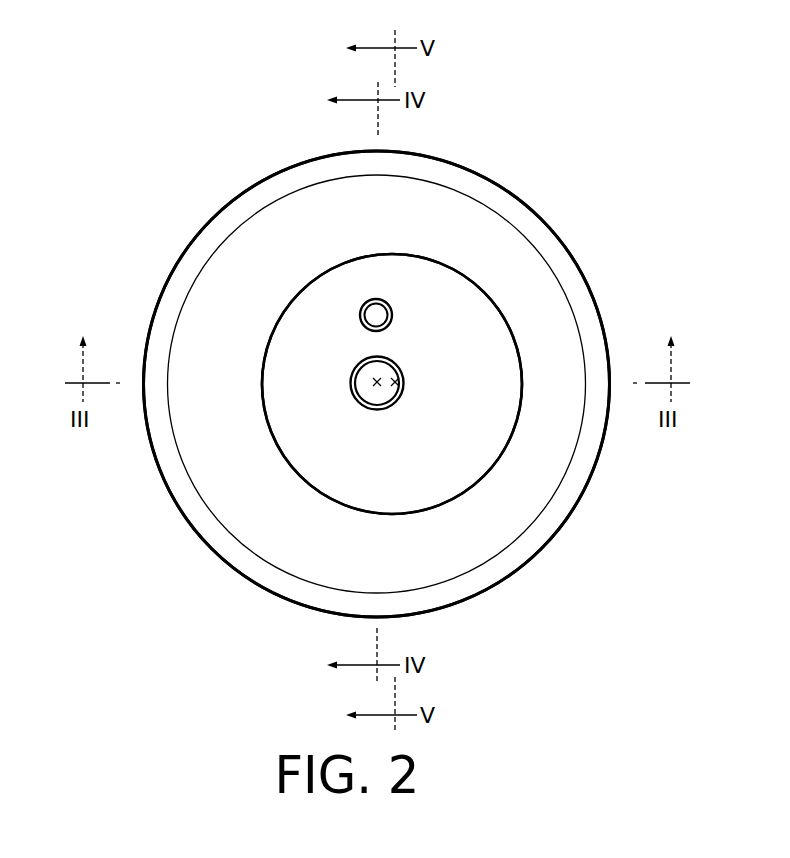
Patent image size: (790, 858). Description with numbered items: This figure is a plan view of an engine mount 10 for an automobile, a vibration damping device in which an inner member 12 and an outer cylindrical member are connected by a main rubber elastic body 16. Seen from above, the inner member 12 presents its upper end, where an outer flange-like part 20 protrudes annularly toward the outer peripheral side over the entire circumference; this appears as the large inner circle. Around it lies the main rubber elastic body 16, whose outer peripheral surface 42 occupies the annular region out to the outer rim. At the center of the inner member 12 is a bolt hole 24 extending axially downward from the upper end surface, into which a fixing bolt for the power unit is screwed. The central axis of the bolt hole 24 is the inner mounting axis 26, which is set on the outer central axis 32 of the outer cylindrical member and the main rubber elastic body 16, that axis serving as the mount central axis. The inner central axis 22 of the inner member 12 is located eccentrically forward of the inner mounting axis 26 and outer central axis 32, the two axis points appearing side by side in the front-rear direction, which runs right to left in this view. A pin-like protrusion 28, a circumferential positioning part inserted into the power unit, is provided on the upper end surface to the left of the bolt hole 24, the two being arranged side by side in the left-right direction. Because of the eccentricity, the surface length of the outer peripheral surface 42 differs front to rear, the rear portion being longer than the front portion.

The engine mount 10 is at (614, 214).
The inner member 12 is at (470, 258).
The main rubber elastic body 16 is at (189, 224).
The outer flange-like part 20 is at (472, 445).
The inner central axis 22 is at (395, 378).
The bolt hole 24 is at (378, 403).
The inner mounting axis 26 is at (238, 343).
The outer central axis 32 is at (374, 382).
The pin-like protrusion 28 is at (377, 312).
The outer peripheral surface 42 is at (547, 327).